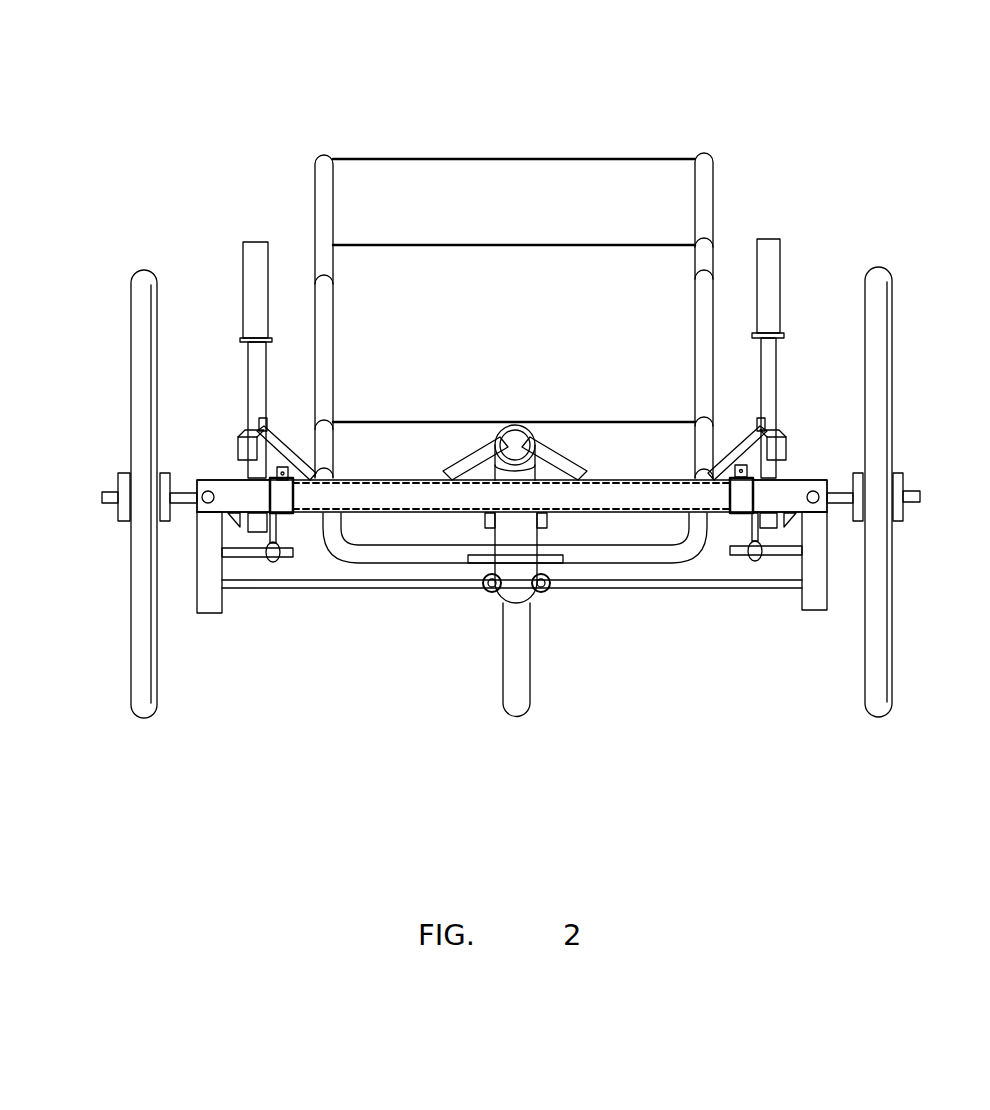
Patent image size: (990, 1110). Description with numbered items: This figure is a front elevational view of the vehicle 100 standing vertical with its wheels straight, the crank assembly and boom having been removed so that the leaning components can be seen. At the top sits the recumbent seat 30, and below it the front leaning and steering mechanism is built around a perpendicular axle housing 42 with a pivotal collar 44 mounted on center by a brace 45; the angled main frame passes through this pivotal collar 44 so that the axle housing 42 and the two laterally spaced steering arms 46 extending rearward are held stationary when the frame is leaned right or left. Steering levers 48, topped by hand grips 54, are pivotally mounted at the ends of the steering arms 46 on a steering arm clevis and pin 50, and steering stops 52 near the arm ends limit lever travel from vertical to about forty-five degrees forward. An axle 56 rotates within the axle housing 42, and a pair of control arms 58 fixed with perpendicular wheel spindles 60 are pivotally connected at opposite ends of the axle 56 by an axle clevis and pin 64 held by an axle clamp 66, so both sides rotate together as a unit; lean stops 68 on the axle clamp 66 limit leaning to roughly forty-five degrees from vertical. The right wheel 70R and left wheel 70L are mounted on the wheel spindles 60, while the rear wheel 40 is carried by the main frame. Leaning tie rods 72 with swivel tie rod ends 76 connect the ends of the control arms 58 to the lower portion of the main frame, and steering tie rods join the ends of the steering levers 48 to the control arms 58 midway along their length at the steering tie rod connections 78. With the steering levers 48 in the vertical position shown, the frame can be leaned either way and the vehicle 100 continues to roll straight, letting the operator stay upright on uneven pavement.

The vehicle 100 is at (508, 108).
The recumbent seat 30 is at (315, 192).
The hand grips 54 is at (243, 277).
The steering levers 48 is at (247, 372).
The steering arms 46 is at (268, 452).
The axle clevis and pin 64 is at (227, 482).
The wheel spindles 60 is at (103, 492).
The right wheel 70R is at (133, 665).
The control arms 58 is at (205, 612).
The steering tie rod connections 78 is at (280, 557).
The brace 45 is at (478, 450).
The pivotal collar 44 is at (515, 428).
The axle clamp 66 is at (728, 458).
The steering stops 52 is at (765, 415).
The steering arm clevis and pin 50 is at (787, 432).
The axle housing 42 is at (717, 513).
The lean stops 68 is at (790, 515).
The axle 56 is at (603, 495).
The swivel tie rod ends 76 is at (543, 592).
The leaning tie rods 72 is at (353, 590).
The rear wheel 40 is at (515, 718).
The left wheel 70L is at (892, 705).